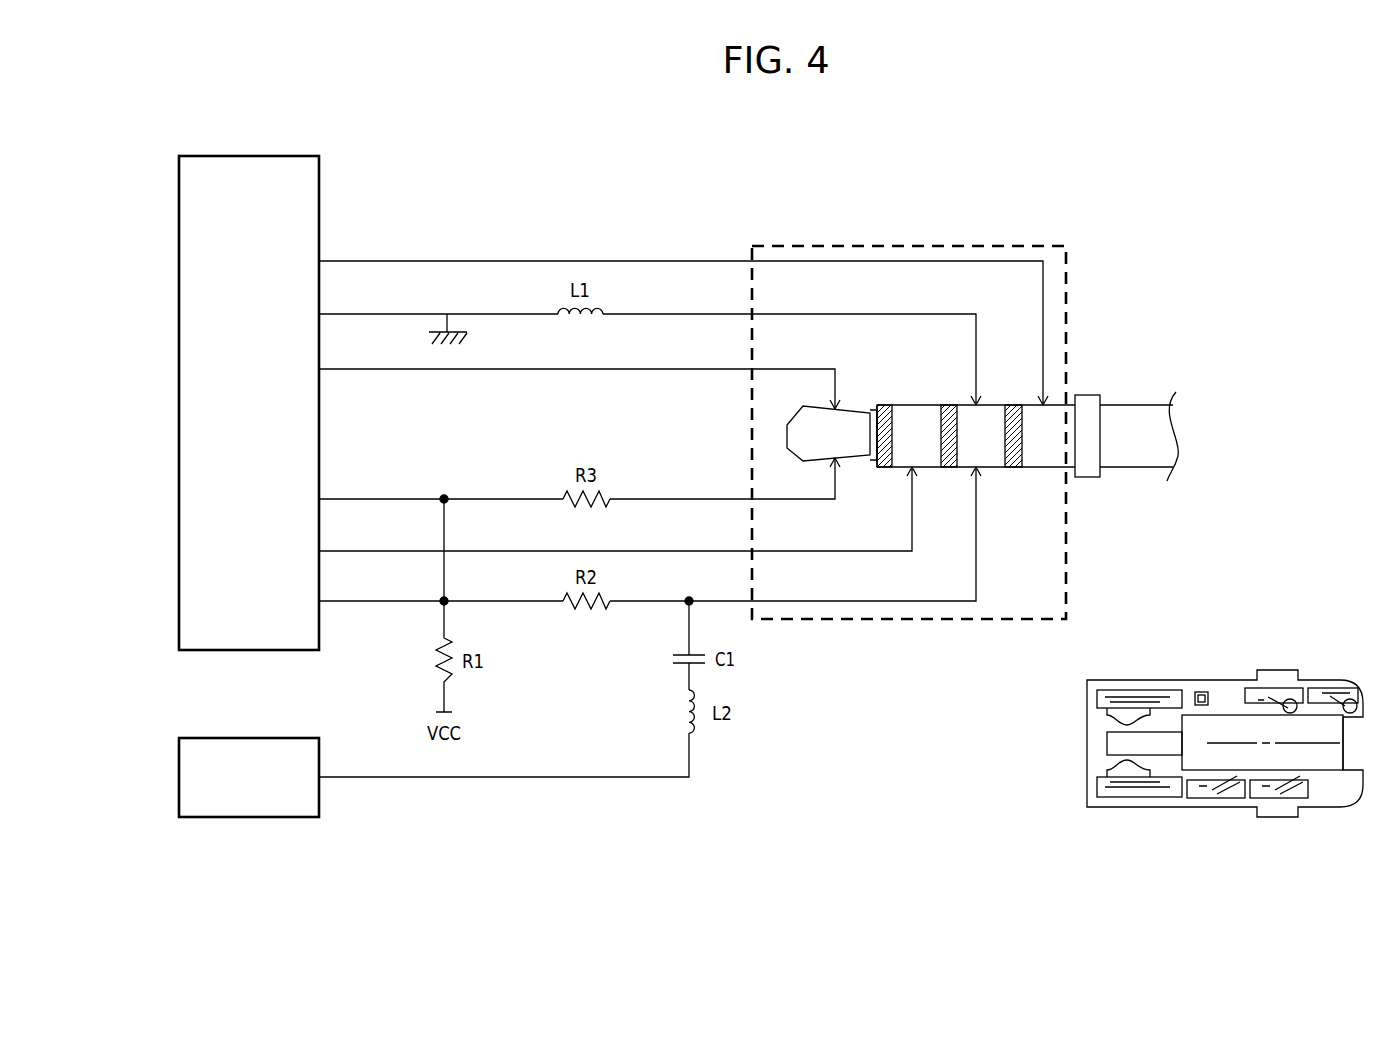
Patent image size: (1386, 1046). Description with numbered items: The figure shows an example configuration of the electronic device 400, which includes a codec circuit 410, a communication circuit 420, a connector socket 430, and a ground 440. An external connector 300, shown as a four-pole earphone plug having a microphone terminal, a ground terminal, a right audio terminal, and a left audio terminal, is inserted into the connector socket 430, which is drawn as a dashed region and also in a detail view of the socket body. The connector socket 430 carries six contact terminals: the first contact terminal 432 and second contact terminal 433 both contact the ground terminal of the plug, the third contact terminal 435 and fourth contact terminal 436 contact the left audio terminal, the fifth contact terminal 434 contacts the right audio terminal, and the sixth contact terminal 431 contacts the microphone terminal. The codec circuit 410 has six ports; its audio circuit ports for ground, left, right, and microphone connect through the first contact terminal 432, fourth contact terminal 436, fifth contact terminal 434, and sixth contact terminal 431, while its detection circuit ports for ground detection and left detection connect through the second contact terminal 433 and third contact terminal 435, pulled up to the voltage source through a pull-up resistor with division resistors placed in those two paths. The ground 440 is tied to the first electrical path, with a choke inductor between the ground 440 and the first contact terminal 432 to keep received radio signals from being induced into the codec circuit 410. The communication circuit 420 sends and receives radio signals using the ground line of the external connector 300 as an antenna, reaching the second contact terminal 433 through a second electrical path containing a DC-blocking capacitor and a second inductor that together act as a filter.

The electronic device 400 is at (1124, 156).
The codec circuit 410 is at (319, 183).
The communication circuit 420 is at (262, 817).
The connector socket 430 is at (1066, 310).
The sixth contact terminal 431 is at (903, 262).
The first contact terminal 432 is at (840, 313).
The second contact terminal 433 is at (903, 602).
The fifth contact terminal 434 is at (840, 552).
The third contact terminal 435 is at (790, 500).
The fourth contact terminal 436 is at (787, 367).
The ground 440 is at (428, 337).
The external connector 300 is at (1090, 395).